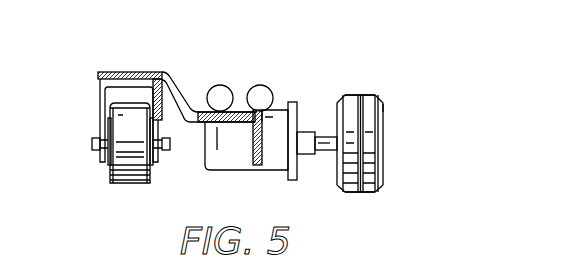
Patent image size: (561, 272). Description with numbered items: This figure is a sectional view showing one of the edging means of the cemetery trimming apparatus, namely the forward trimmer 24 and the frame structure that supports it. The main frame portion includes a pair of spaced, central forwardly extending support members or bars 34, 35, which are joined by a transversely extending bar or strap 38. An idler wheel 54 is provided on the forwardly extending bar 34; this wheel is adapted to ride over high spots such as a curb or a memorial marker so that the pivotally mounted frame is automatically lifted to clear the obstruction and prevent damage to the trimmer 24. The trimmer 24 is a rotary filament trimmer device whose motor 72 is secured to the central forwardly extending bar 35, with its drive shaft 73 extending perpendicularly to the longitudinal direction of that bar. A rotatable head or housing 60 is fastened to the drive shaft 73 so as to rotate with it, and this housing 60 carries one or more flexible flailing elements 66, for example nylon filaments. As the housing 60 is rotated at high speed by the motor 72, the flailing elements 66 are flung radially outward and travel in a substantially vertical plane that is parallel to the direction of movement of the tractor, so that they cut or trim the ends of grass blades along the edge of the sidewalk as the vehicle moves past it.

The trimmer 24 is at (396, 109).
The forwardly extending support bar 34 is at (134, 72).
The forwardly extending support bar 35 is at (240, 110).
The transversely extending bar 38 is at (175, 82).
The idler wheel 54 is at (110, 180).
The rotatable head or housing 60 is at (372, 97).
The flexible flailing elements 66 is at (362, 95).
The motor 72 is at (272, 160).
The drive shaft 73 is at (320, 134).